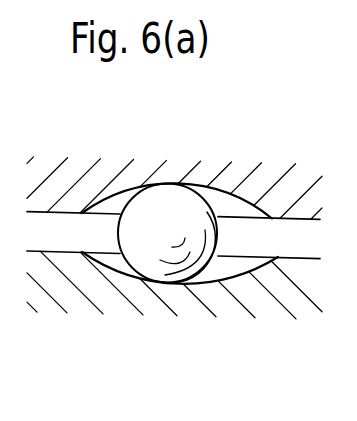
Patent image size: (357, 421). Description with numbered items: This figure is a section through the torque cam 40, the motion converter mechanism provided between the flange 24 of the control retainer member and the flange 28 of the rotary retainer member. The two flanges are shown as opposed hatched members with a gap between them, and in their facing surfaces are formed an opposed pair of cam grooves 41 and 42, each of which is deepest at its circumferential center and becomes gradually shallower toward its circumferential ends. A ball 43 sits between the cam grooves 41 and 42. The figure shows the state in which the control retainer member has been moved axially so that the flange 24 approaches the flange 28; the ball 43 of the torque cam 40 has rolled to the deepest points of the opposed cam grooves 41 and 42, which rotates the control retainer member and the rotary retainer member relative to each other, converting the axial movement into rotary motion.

The annular flange 24 is at (67, 176).
The annular flange 28 is at (77, 278).
The torque cam 40 is at (163, 185).
The cam groove 41 is at (222, 198).
The cam groove 42 is at (229, 271).
The ball 43 is at (158, 247).